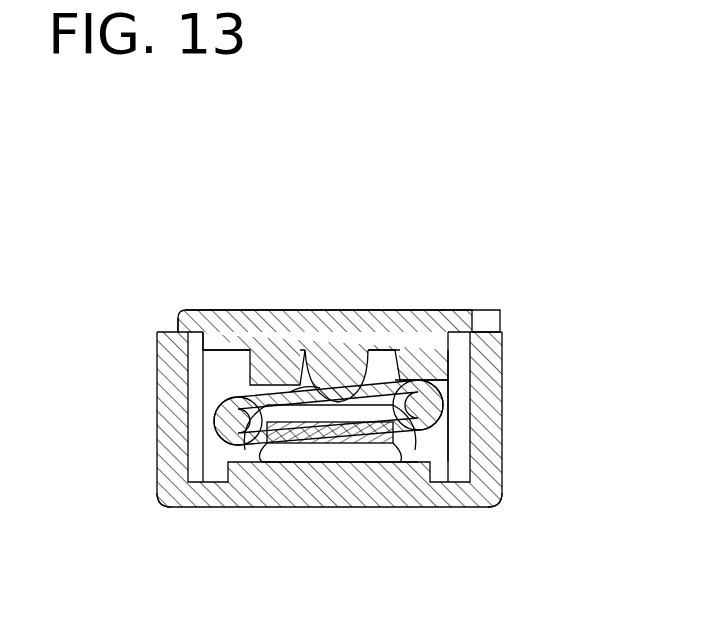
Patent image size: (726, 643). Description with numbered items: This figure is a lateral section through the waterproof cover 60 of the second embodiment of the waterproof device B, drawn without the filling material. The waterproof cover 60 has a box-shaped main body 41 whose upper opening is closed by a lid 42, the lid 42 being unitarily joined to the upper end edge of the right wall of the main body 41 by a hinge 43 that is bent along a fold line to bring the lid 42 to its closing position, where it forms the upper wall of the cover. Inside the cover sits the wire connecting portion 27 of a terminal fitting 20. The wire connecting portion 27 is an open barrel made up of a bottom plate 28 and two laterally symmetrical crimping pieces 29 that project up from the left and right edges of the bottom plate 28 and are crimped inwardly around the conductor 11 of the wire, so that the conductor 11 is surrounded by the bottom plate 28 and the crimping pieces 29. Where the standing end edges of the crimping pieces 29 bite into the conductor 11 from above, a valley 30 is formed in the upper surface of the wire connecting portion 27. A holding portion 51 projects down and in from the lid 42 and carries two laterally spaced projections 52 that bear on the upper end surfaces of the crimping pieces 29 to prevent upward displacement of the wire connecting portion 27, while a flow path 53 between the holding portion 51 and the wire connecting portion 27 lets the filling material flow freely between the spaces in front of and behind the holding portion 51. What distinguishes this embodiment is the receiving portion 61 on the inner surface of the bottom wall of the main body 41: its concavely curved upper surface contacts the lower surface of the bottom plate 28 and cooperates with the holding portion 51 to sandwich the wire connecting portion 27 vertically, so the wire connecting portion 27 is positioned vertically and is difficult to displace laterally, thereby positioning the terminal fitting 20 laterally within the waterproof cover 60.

The waterproof device B is at (505, 210).
The waterproof cover 60 is at (545, 277).
The receiving portion 61 is at (400, 486).
The main body 41 is at (486, 496).
The lid 42 is at (233, 332).
The hinge 43 is at (500, 320).
The valley 30 is at (340, 350).
The holding portion 51 is at (405, 214).
The projections 52 is at (275, 390).
The flow path 53 is at (305, 380).
The conductor 11 is at (300, 432).
The terminal fitting 20 is at (437, 388).
The wire connecting portion 27 is at (400, 583).
The bottom plate 28 is at (317, 462).
The crimping pieces 29 is at (285, 450).